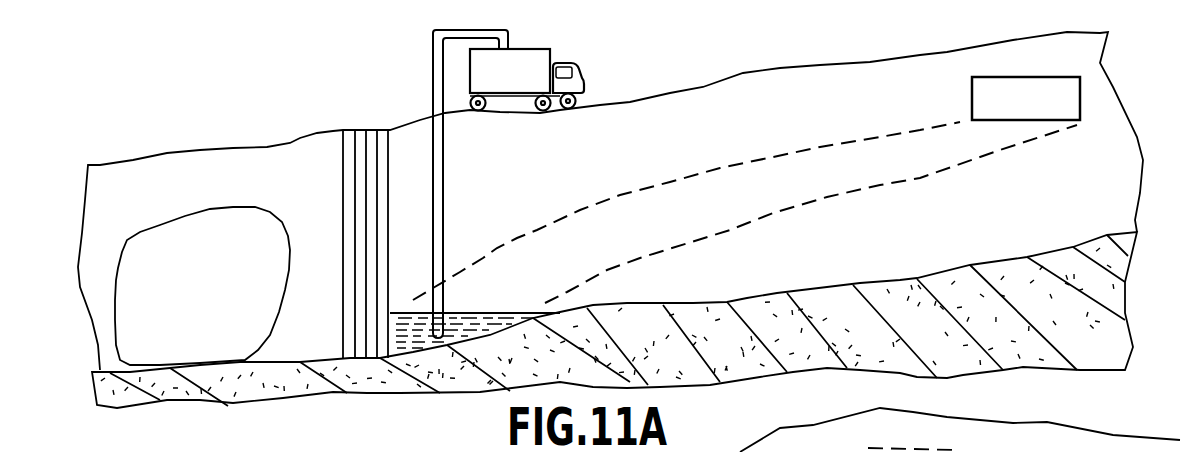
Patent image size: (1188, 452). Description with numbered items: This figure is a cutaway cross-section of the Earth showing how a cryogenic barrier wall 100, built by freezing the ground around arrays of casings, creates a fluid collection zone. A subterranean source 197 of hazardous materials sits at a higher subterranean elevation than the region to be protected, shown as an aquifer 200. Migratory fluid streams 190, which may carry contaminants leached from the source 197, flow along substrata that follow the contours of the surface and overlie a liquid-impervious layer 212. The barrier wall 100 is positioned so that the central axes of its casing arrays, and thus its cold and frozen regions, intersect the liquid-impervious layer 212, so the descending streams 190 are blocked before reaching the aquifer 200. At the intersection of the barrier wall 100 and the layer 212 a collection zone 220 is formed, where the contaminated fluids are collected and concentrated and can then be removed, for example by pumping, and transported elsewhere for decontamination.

The barrier wall 100 is at (389, 125).
The migratory fluid streams 190 is at (778, 212).
The subterranean source of hazardous materials 197 is at (982, 95).
The aquifer 200 is at (165, 283).
The liquid-impervious layer 212 is at (895, 333).
The collection zone 220 is at (505, 287).